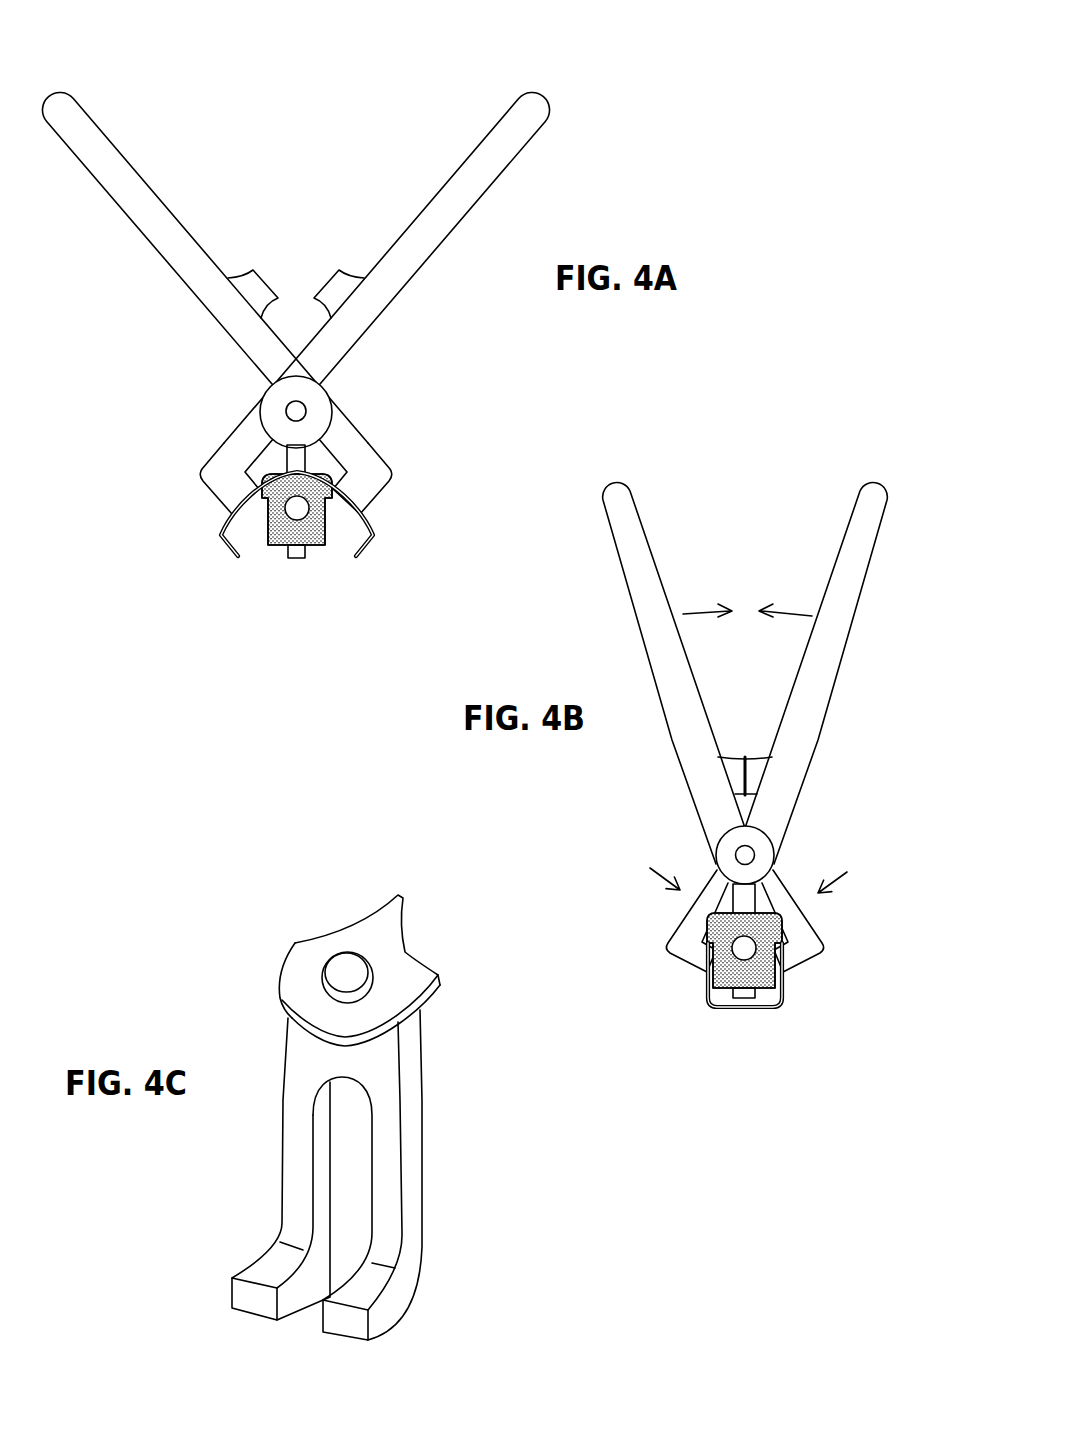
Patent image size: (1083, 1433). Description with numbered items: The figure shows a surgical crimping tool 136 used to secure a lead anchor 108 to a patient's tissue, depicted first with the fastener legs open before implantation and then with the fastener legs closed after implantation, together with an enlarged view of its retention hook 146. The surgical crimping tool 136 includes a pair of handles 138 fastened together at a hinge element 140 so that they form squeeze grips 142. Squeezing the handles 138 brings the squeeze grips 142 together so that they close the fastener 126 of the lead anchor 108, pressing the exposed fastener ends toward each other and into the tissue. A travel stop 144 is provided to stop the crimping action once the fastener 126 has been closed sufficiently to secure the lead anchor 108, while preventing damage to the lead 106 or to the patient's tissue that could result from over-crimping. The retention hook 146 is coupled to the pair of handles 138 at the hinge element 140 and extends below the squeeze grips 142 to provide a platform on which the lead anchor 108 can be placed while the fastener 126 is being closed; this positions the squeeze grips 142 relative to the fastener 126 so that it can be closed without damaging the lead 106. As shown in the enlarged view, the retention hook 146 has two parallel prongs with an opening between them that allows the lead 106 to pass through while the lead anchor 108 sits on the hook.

In FIG. 4A, the lead 106 is at (296, 512).
In FIG. 4B, the lead 106 is at (747, 956).
In FIG. 4A, the lead anchor 108 is at (267, 480).
In FIG. 4B, the lead anchor 108 is at (722, 973).
In FIG. 4A, the fastener 126 is at (230, 543).
In FIG. 4B, the fastener 126 is at (773, 1007).
In FIG. 4A, the surgical crimping tool 136 is at (145, 340).
In FIG. 4B, the surgical crimping tool 136 is at (888, 778).
In FIG. 4A, the handles 138 is at (513, 100).
In FIG. 4B, the handles 138 is at (878, 488).
In FIG. 4A, the hinge element 140 is at (300, 411).
In FIG. 4B, the hinge element 140 is at (749, 853).
In FIG. 4A, the squeeze grips 142 is at (388, 478).
In FIG. 4B, the squeeze grips 142 is at (823, 948).
In FIG. 4A, the travel stop 144 is at (332, 280).
In FIG. 4B, the travel stop 144 is at (760, 768).
In FIG. 4C, the retention hook 146 is at (457, 1173).